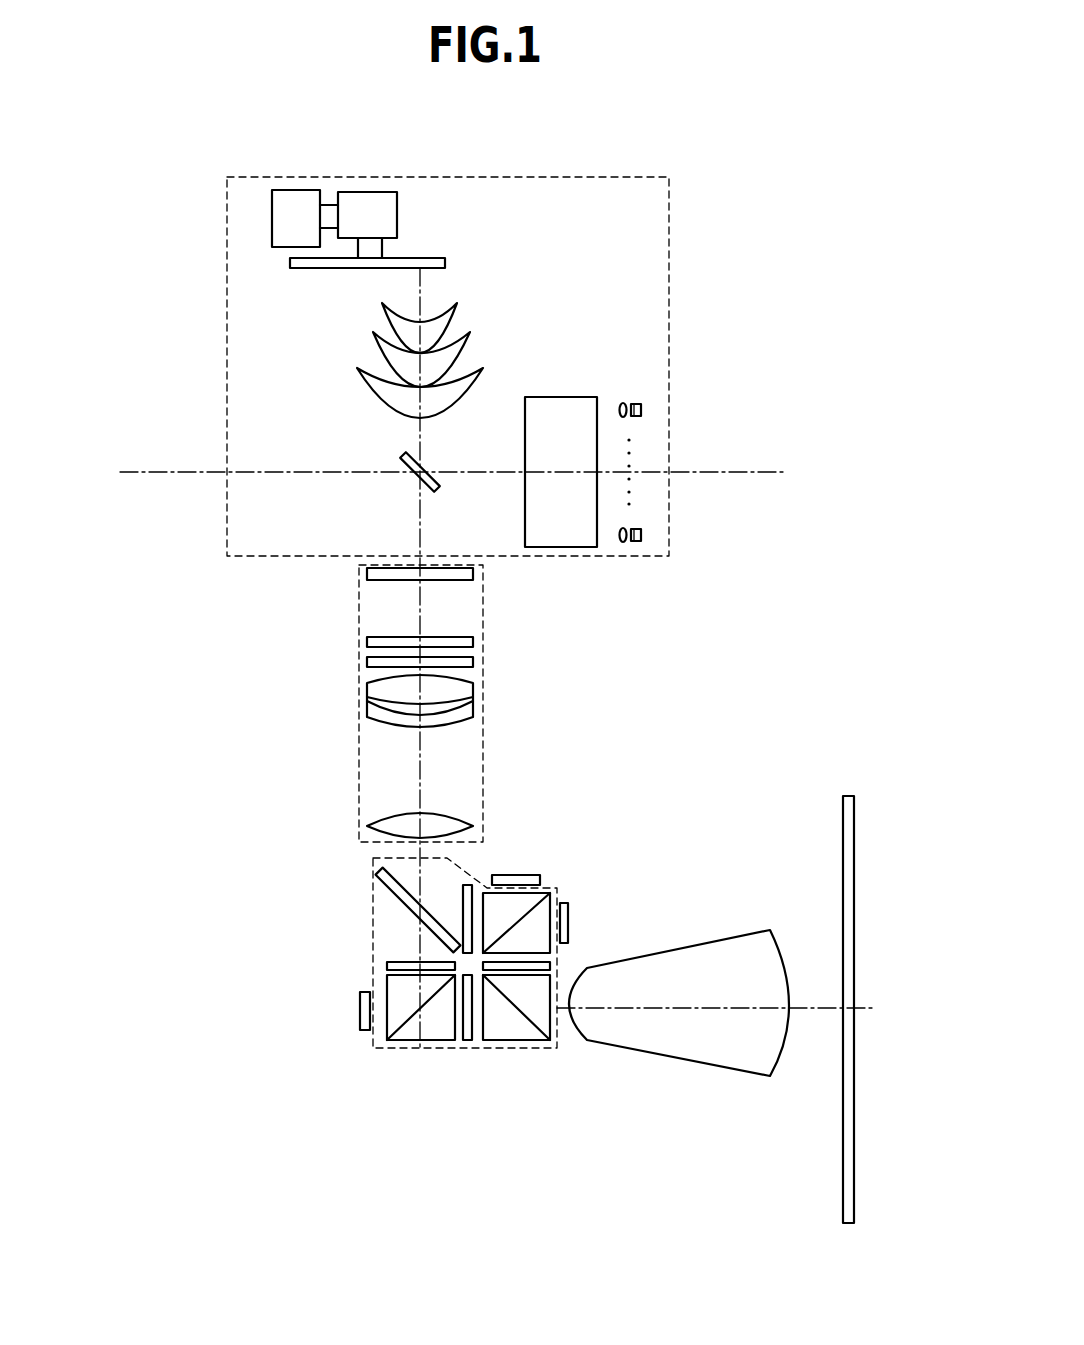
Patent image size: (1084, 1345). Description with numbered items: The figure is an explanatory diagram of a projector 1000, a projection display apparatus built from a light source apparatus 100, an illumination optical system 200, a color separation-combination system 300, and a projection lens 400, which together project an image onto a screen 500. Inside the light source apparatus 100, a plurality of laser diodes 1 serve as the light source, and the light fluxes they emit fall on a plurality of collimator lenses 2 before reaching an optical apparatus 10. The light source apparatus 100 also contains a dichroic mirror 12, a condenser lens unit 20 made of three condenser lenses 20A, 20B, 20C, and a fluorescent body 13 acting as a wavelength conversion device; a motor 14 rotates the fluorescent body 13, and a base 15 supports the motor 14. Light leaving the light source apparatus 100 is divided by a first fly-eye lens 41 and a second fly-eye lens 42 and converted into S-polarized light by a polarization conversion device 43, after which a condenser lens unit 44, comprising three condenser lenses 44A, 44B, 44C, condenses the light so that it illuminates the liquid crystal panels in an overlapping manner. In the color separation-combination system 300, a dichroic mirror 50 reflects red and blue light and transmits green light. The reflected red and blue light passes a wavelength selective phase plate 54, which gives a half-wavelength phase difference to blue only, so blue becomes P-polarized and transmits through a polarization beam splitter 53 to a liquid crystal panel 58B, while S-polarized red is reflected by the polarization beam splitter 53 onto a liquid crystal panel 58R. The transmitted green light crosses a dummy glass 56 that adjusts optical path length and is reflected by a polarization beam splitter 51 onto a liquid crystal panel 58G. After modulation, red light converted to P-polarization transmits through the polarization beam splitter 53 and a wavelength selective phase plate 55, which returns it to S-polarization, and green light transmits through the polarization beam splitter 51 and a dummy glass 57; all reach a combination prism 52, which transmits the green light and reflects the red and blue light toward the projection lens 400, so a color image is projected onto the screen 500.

The projector 1000 is at (681, 135).
The light source apparatus 100 is at (557, 556).
The optical apparatus 10 is at (570, 397).
The laser diodes 1 is at (645, 408).
The collimator lenses 2 is at (620, 547).
The dichroic mirror 12 is at (403, 457).
The fluorescent body 13 is at (290, 265).
The motor 14 is at (373, 195).
The base 15 is at (282, 218).
The condenser lens unit 20 is at (158, 308).
The condenser lens 20A is at (385, 318).
The condenser lens 20B is at (377, 352).
The condenser lens 20C is at (360, 390).
The illumination optical system 200 is at (483, 690).
The first fly-eye lens 41 is at (367, 572).
The second fly-eye lens 42 is at (367, 641).
The polarization conversion device 43 is at (367, 661).
The condenser lens unit 44 is at (230, 725).
The condenser lens 44A is at (367, 688).
The condenser lens 44B is at (367, 712).
The condenser lens 44C is at (367, 828).
The color separation-combination system 300 is at (373, 925).
The dichroic mirror 50 is at (385, 880).
The polarization beam splitter 51 is at (408, 1035).
The combination prism 52 is at (518, 1032).
The polarization beam splitter 53 is at (530, 898).
The wavelength selective phase plate 54 is at (468, 890).
The wavelength selective phase plate 55 is at (550, 965).
The dummy glass 56 is at (387, 965).
The dummy glass 57 is at (467, 1035).
The liquid crystal panel 58R is at (515, 876).
The liquid crystal panel 58G is at (360, 1012).
The liquid crystal panel 58B is at (572, 915).
The projection lens 400 is at (671, 1043).
The screen 500 is at (843, 862).